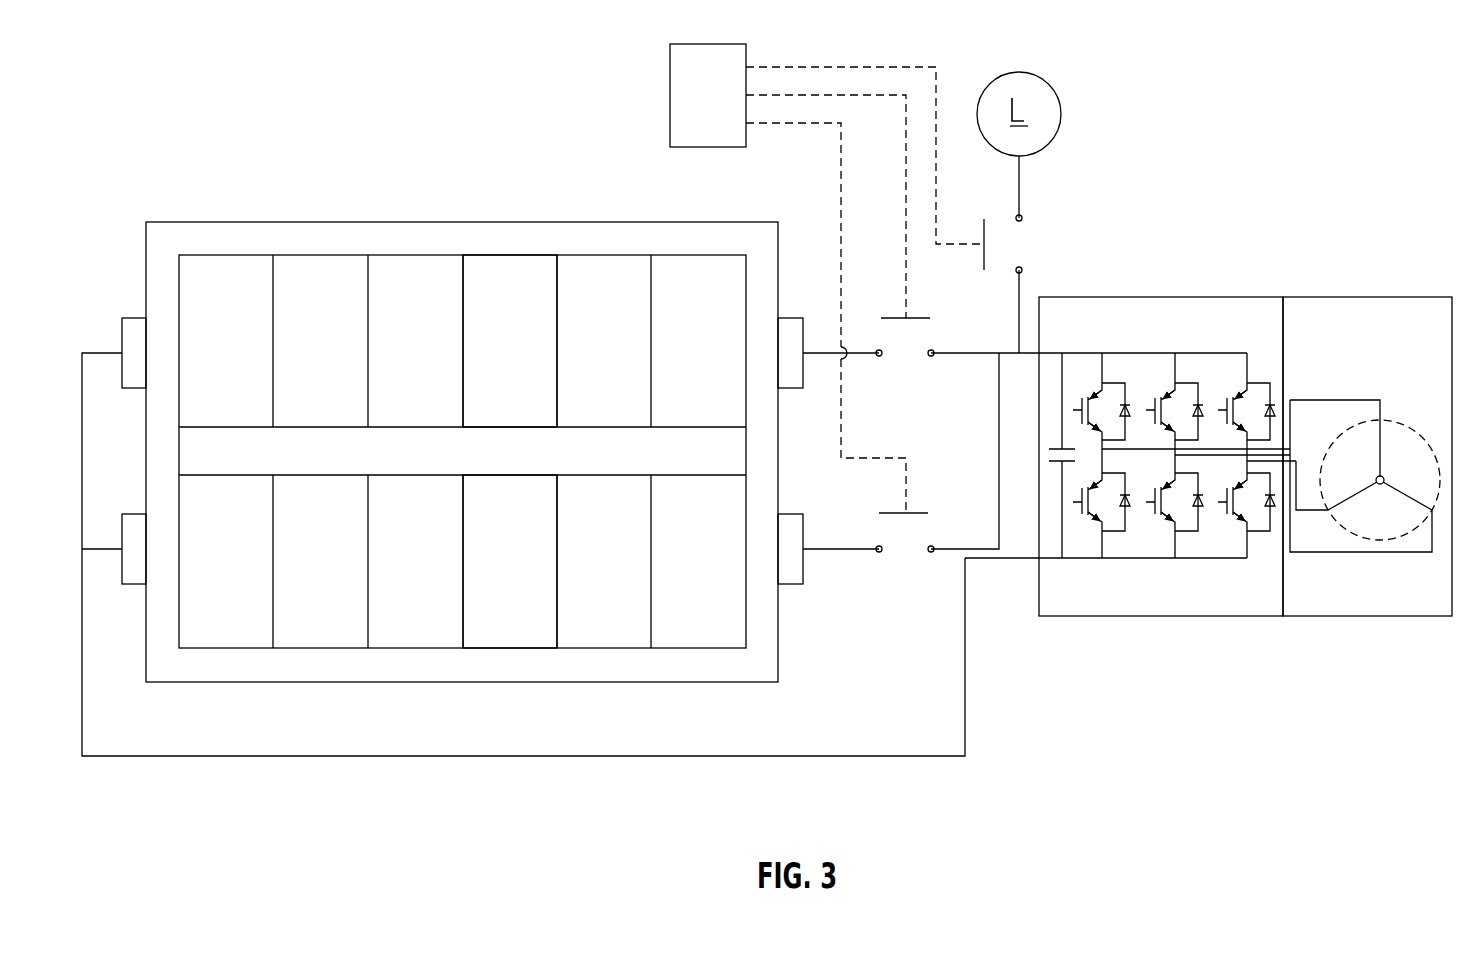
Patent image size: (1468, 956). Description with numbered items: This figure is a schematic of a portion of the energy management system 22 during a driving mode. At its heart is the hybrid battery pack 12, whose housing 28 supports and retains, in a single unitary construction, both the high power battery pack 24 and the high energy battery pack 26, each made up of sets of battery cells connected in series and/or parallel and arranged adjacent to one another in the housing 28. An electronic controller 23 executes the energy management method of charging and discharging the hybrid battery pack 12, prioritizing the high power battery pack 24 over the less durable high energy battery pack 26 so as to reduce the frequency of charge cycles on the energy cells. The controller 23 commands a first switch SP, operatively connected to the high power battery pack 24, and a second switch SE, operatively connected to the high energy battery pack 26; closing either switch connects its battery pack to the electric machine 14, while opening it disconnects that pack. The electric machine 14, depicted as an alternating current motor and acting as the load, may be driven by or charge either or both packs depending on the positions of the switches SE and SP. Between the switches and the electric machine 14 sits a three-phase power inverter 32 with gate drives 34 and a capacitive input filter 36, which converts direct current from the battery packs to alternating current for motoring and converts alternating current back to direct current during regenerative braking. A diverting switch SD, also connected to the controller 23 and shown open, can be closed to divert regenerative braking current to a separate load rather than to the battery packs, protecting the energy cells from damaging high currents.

The energy management system 22 is at (233, 40).
The housing 28 is at (165, 222).
The hybrid battery pack 12 is at (298, 255).
The high energy battery pack 26 is at (523, 286).
The high power battery pack 24 is at (523, 614).
The electronic controller 23 is at (723, 109).
The diverting switch SD is at (1025, 240).
The second switch SE is at (925, 344).
The first switch SP is at (925, 539).
The power inverter 32 is at (1232, 297).
The capacitive input filter 36 is at (1056, 430).
The gate drives 34 is at (1090, 374).
The electric machine 14 is at (1395, 297).